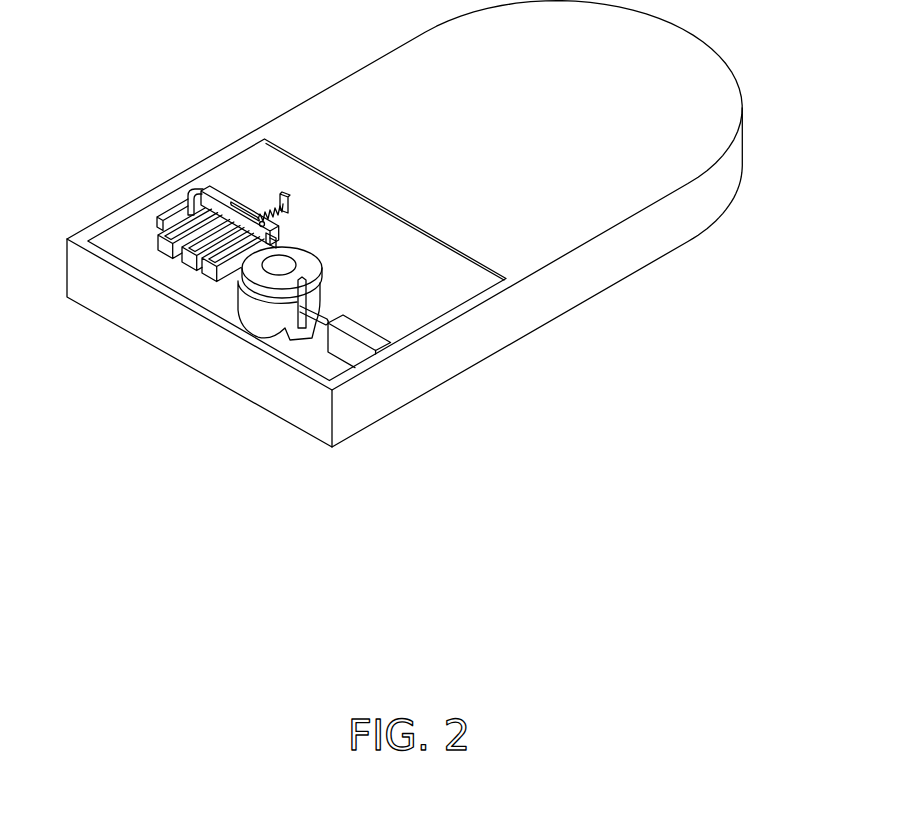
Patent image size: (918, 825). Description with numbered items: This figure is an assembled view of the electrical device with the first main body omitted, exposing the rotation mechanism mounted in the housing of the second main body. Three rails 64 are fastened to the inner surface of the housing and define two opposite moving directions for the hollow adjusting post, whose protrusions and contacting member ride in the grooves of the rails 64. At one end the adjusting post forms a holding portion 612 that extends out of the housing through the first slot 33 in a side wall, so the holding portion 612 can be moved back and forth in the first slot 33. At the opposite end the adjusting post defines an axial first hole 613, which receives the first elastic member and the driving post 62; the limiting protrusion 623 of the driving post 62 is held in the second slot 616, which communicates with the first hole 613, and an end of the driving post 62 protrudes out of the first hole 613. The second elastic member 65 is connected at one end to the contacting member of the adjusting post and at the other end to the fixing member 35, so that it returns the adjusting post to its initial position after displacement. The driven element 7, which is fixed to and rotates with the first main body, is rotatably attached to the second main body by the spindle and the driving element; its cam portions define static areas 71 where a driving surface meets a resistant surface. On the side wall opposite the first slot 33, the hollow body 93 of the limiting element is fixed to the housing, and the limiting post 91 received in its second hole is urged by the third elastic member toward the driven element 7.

The first slot 33 is at (163, 218).
The fixing member 35 is at (281, 193).
The holding portion 612 is at (186, 215).
The second slot 616 is at (188, 199).
The second elastic member 65 is at (233, 212).
The rails 64 is at (177, 260).
The driving post 62 is at (235, 300).
The driven element 7 is at (270, 318).
The static areas 71 is at (303, 328).
The limiting post 91 is at (328, 322).
The body 93 is at (355, 352).
The first hole 613 is at (312, 228).
The limiting protrusion 623 is at (278, 225).